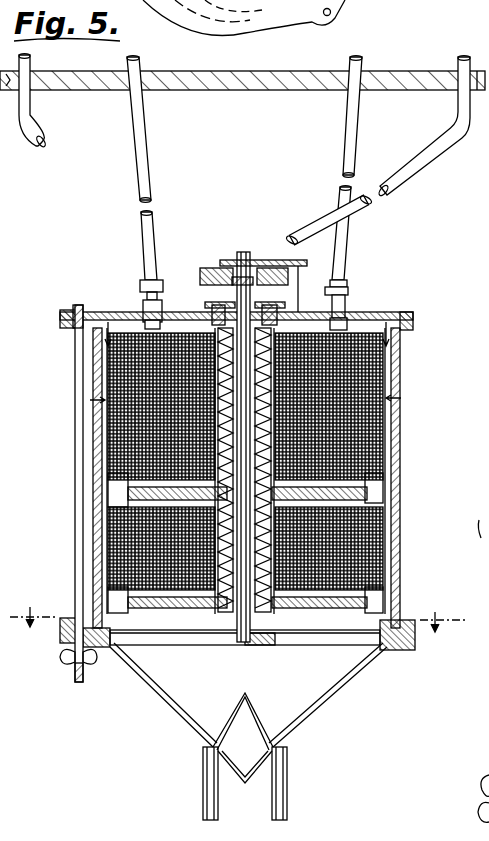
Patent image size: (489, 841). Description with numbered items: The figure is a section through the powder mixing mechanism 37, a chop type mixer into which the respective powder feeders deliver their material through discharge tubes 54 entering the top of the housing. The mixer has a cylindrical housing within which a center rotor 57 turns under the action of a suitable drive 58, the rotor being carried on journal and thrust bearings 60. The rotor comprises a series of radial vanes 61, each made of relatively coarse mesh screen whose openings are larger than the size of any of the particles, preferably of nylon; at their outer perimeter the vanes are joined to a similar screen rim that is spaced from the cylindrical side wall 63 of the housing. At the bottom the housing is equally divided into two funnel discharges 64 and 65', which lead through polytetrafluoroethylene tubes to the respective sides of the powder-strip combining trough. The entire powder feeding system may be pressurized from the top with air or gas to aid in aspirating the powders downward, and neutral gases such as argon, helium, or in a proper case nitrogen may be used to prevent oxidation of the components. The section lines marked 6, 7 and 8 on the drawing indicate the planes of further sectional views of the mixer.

The discharge tubes 54 is at (146, 170).
The center rotor 57 is at (367, 337).
The drive 58 is at (222, 268).
The journal and thrust bearings 60 is at (246, 262).
The radial vanes 61 is at (372, 557).
The cylindrical side wall 63 is at (95, 538).
The powder mixing mechanism 37 is at (463, 457).
The funnel discharge 64 is at (155, 697).
The funnel discharge 65' is at (328, 695).
The section line 6- 6 is at (244, 332).
The section line 7- 7 is at (248, 391).
The section line 8- 8 is at (237, 611).